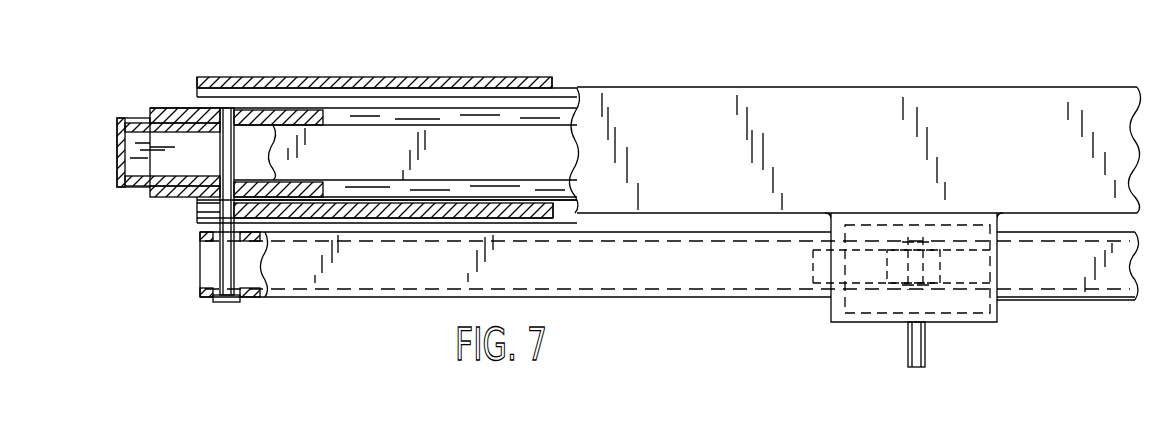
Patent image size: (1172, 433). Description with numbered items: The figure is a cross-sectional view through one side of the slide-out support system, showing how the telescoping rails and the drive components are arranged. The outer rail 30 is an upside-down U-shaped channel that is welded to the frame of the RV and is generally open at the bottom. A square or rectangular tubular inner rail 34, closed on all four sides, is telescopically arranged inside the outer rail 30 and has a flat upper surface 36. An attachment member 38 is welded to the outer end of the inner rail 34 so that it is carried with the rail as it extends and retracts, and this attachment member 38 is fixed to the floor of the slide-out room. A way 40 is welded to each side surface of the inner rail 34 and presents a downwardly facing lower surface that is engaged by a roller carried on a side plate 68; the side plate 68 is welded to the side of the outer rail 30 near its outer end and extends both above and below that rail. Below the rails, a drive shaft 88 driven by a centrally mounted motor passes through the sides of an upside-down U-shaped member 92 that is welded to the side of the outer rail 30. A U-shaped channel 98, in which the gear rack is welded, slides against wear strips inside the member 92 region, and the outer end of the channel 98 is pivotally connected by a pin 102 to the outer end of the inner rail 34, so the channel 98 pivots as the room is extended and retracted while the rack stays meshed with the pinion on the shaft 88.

The outer rail 30 is at (653, 86).
The inner rail 34 is at (499, 121).
The flat upper surface 36 is at (370, 164).
The attachment member 38 is at (117, 151).
The way 40 is at (170, 108).
The side plate 68 is at (302, 77).
The drive shaft 88 is at (926, 356).
The upside-down U-shaped member 92 is at (999, 323).
The U-shaped channel 98 is at (296, 298).
The pin 102 is at (220, 263).